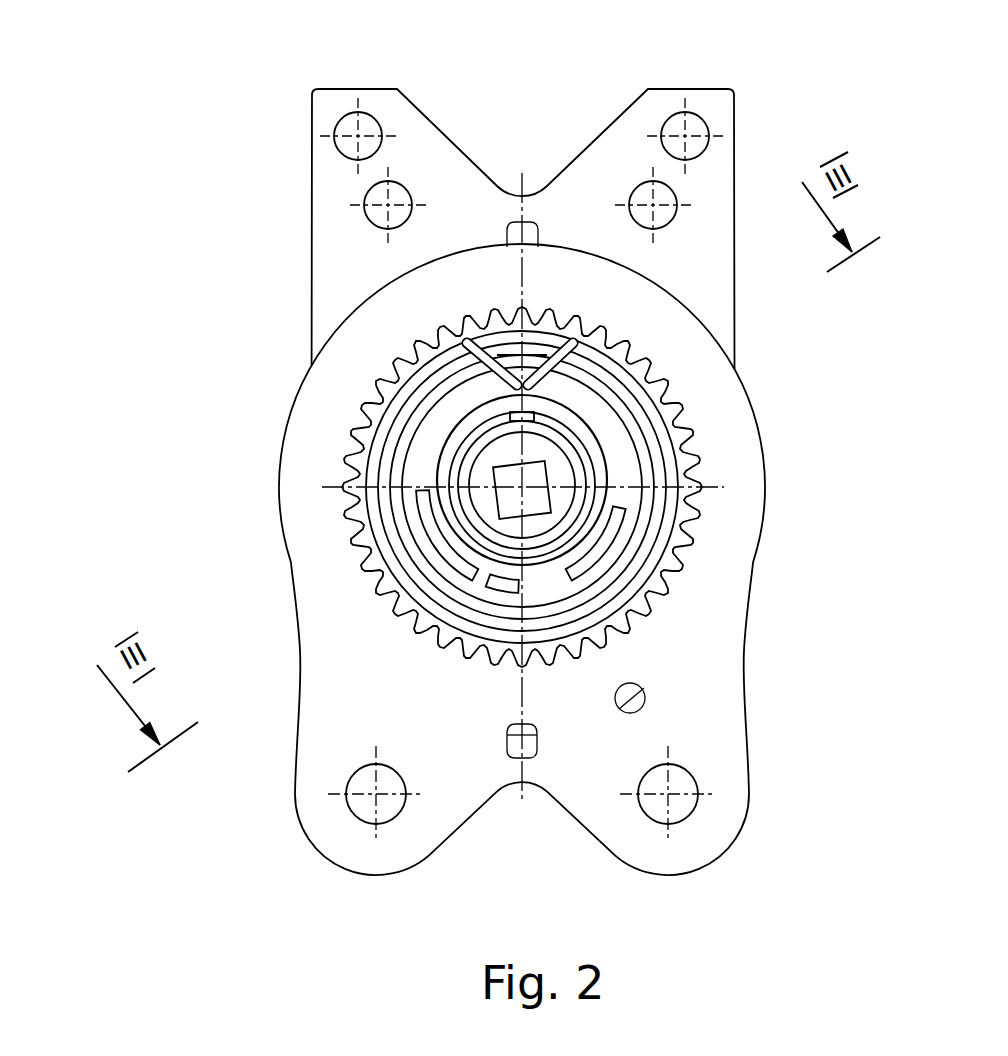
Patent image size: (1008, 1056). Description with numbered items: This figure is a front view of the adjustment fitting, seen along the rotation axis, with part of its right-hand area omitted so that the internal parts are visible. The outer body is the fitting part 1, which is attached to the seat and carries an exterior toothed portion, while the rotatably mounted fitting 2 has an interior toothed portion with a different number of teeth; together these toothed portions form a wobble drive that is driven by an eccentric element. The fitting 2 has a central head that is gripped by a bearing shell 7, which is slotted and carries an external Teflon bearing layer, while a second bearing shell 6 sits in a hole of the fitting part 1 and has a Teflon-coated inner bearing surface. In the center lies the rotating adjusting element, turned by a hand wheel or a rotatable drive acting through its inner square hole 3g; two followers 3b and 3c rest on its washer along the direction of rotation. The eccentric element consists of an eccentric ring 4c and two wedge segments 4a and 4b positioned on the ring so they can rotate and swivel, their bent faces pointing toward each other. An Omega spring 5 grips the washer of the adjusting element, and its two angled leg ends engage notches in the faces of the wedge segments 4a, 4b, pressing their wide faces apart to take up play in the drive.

The fitting part 1 is at (768, 420).
The fitting 2 is at (735, 133).
The follower 3b is at (435, 557).
The follower 3c is at (620, 530).
The inner square hole 3g is at (561, 592).
The wedge segment 4a is at (576, 323).
The wedge segment 4b is at (468, 395).
The eccentric ring 4c is at (497, 592).
The Omega spring 5 is at (628, 378).
The second bearing shell 6 is at (530, 368).
The bearing shell 7 is at (452, 507).